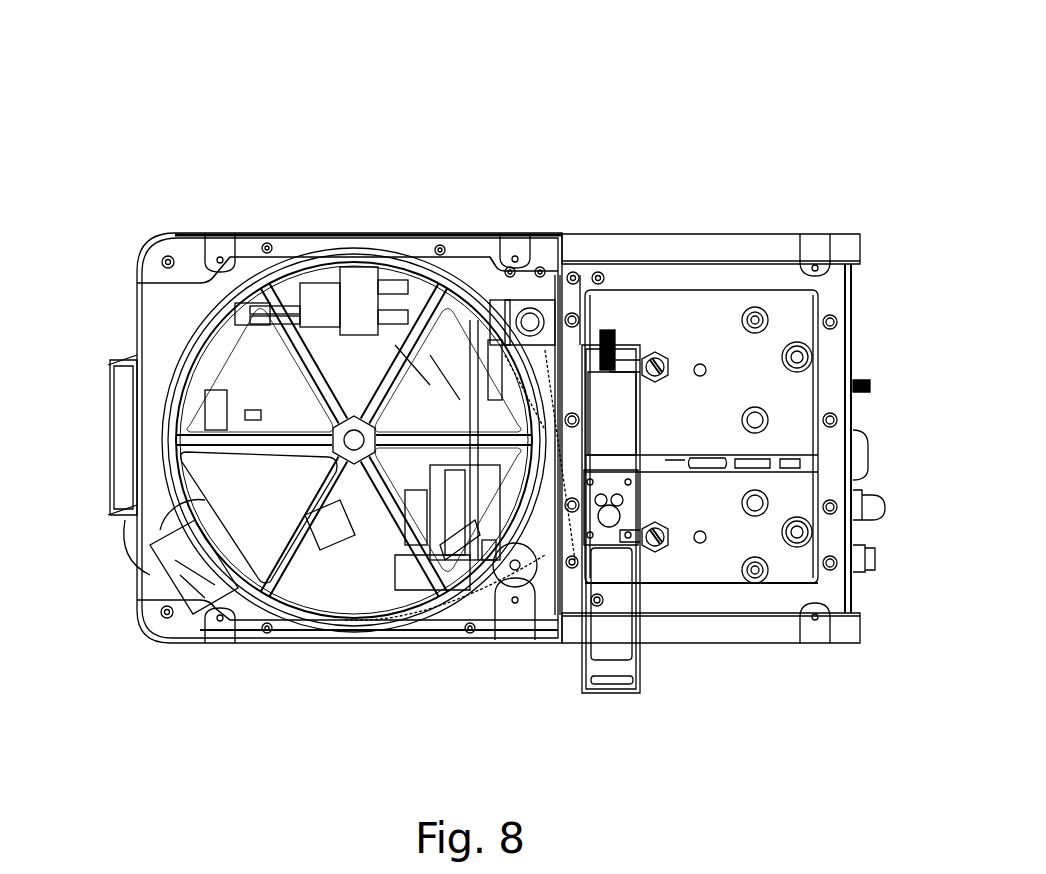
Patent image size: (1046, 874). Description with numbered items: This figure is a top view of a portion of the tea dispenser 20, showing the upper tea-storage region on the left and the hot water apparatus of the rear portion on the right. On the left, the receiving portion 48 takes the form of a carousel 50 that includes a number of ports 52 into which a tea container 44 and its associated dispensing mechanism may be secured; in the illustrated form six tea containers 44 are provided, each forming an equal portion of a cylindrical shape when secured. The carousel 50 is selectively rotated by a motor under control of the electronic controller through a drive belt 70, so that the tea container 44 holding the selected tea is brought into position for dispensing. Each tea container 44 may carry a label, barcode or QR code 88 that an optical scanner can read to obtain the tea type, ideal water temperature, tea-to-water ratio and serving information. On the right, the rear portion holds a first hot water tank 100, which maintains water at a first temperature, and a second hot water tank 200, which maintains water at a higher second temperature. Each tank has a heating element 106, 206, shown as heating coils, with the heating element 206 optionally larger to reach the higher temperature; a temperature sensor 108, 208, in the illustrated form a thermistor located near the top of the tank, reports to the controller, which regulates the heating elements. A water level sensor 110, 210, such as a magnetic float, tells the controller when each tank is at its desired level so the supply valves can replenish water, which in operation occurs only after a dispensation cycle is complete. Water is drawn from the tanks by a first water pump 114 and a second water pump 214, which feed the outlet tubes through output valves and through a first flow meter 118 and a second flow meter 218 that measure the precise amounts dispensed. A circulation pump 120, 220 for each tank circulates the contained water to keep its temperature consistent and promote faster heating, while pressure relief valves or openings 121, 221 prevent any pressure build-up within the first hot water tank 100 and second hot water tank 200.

The tea dispenser 20 is at (253, 58).
The tea container 44 is at (215, 515).
The receiving portion 48 is at (410, 226).
The carousel 50 is at (200, 342).
The port 52 is at (318, 290).
The drive belt 70 is at (552, 362).
The QR code 88 is at (600, 433).
The first hot water tank 100 is at (787, 310).
The heating element 106 is at (752, 305).
The temperature sensor 108 is at (664, 352).
The water level sensor 110 is at (662, 357).
The first water pump 114 is at (495, 372).
The first flow meter 118 is at (497, 353).
The circulation pump 120 is at (521, 285).
The pressure relief valve or opening 121 is at (812, 357).
The second hot water tank 200 is at (788, 577).
The heating element 206 is at (755, 585).
The temperature sensor 208 is at (653, 550).
The water level sensor 210 is at (663, 547).
The second water pump 214 is at (470, 527).
The second flow meter 218 is at (484, 555).
The circulation pump 220 is at (520, 568).
The pressure relief valve or opening 221 is at (812, 532).